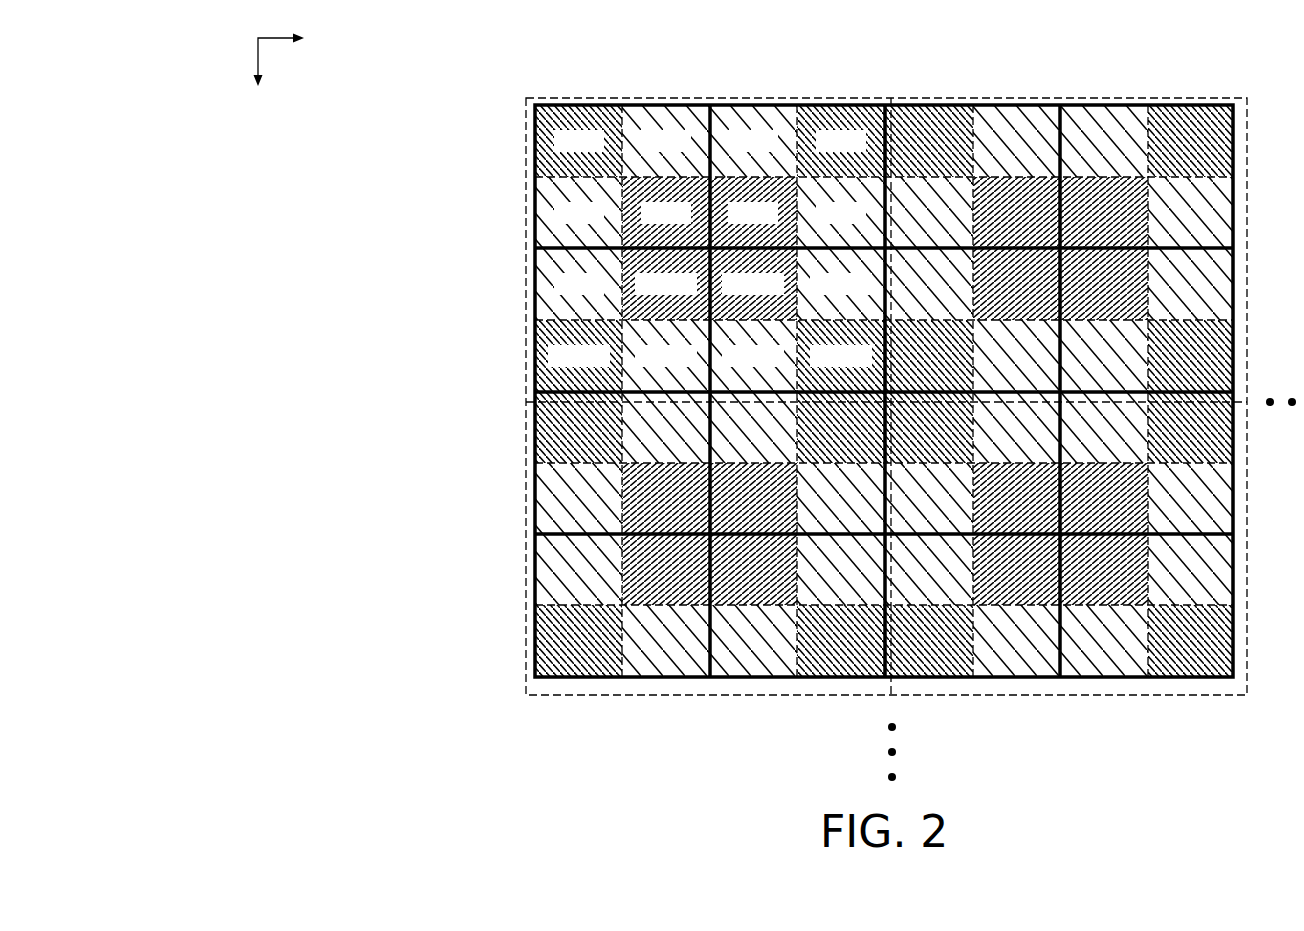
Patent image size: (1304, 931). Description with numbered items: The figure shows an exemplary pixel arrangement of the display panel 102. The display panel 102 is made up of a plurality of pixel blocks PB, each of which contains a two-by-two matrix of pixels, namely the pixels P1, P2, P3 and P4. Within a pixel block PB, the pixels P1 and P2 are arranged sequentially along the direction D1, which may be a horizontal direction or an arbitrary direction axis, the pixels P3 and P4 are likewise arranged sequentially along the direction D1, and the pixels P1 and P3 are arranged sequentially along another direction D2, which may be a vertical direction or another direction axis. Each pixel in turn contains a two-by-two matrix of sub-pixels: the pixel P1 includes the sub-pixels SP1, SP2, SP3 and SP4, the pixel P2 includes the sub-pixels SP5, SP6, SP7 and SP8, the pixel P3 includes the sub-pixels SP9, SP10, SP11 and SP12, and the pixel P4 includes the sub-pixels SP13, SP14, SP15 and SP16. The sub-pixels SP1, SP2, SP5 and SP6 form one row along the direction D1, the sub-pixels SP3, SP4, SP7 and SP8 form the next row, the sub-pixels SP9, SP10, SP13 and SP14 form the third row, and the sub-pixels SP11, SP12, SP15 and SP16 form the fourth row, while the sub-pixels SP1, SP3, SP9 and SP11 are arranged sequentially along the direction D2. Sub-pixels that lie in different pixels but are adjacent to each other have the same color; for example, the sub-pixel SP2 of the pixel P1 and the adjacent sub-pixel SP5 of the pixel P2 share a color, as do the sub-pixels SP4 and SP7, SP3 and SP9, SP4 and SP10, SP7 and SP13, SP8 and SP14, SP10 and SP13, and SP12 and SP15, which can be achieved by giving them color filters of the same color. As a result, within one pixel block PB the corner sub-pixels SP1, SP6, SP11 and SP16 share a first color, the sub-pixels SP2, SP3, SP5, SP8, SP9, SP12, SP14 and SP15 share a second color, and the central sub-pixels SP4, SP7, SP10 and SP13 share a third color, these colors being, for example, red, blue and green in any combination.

The display panel 102 is at (497, 81).
The pixel P1 is at (622, 150).
The pixel P2 is at (797, 150).
The pixel P3 is at (591, 320).
The pixel P4 is at (678, 320).
The pixel block PB is at (714, 98).
The sub-pixel SP1 is at (578, 141).
The sub-pixel SP2 is at (666, 141).
The sub-pixel SP3 is at (578, 212).
The sub-pixel SP4 is at (666, 212).
The sub-pixel SP5 is at (753, 141).
The sub-pixel SP6 is at (841, 141).
The sub-pixel SP7 is at (753, 212).
The sub-pixel SP8 is at (841, 212).
The sub-pixel SP9 is at (578, 284).
The sub-pixel SP10 is at (666, 284).
The sub-pixel SP11 is at (578, 356).
The sub-pixel SP12 is at (666, 356).
The sub-pixel SP13 is at (753, 284).
The sub-pixel SP14 is at (841, 284).
The sub-pixel SP15 is at (753, 356).
The sub-pixel SP16 is at (841, 356).
The direction D1 is at (298, 55).
The direction D2 is at (258, 92).